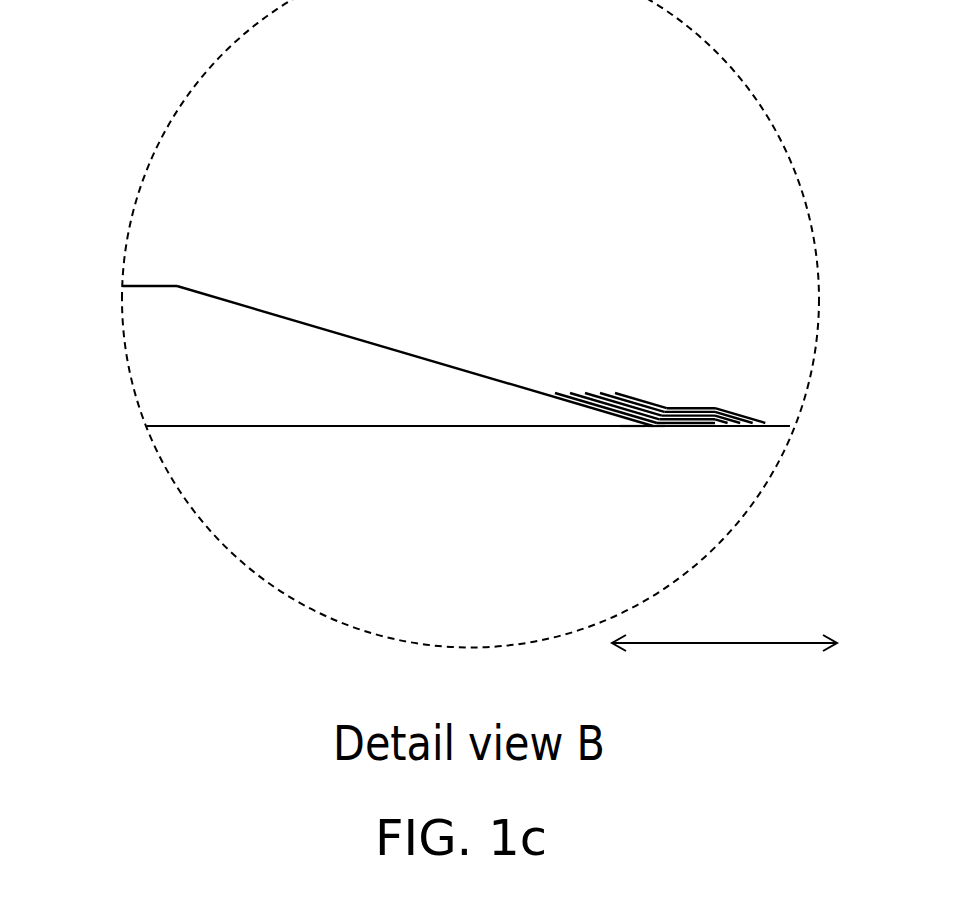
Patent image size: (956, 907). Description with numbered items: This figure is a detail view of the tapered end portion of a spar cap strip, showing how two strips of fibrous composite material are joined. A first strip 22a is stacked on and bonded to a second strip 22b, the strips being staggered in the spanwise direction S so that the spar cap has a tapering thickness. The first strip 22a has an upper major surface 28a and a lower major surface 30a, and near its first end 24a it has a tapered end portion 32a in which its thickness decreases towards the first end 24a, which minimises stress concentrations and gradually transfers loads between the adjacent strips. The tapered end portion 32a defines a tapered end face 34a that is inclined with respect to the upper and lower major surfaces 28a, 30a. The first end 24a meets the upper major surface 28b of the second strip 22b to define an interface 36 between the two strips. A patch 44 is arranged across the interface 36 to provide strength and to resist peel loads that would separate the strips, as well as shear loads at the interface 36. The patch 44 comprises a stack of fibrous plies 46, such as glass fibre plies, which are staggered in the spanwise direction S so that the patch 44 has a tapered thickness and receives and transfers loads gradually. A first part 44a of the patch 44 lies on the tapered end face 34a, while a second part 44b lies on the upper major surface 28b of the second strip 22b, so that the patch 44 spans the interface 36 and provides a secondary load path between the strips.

The first strip 22a is at (143, 350).
The second strip 22b is at (210, 503).
The first end of the first strip 24a is at (630, 437).
The upper major surface of the first strip 28a is at (150, 286).
The upper major surface of the second strip 28b is at (787, 425).
The lower major surface of the first strip 30a is at (262, 427).
The tapered end portion 32a is at (430, 292).
The tapered end face 34a is at (455, 367).
The interface 36 is at (662, 435).
The patch 44 is at (677, 350).
The first part of the patch 44a is at (624, 385).
The second part of the patch 44b is at (720, 387).
The fibrous plies 46 is at (652, 405).
The spanwise direction S is at (724, 665).